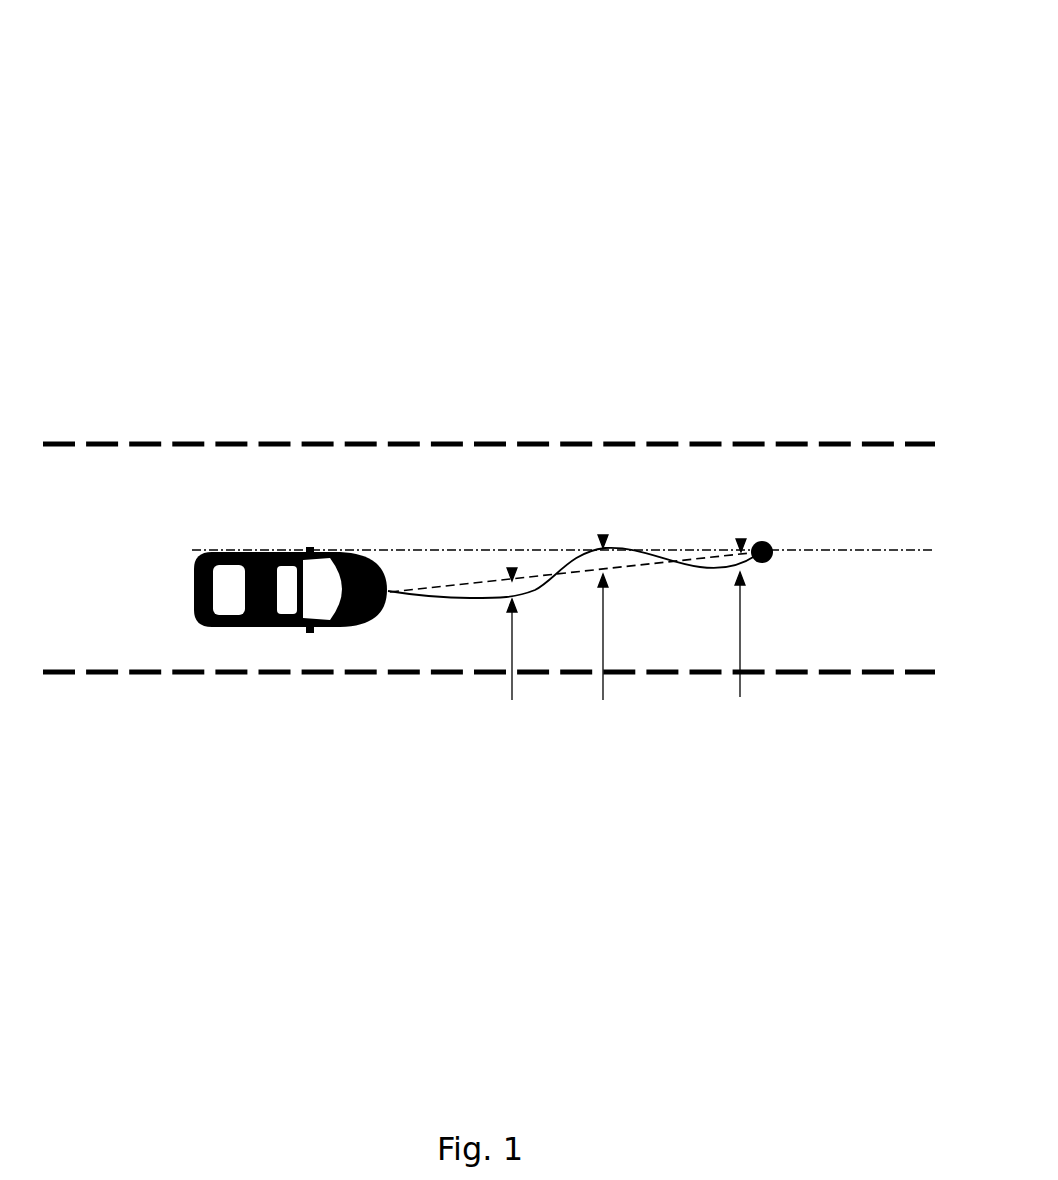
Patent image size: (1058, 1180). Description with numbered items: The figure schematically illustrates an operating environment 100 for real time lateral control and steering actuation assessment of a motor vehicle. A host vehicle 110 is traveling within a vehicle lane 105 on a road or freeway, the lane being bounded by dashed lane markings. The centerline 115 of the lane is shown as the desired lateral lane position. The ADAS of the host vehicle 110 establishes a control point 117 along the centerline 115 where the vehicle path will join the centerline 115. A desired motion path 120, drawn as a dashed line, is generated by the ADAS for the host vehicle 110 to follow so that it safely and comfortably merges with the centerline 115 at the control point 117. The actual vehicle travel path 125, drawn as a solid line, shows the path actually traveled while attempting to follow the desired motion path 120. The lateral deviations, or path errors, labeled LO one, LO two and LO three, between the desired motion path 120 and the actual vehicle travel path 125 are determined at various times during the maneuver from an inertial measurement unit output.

The operating environment 100 is at (477, 44).
The vehicle lane 105 is at (221, 424).
The host vehicle 110 is at (273, 646).
The centerline 115 is at (844, 542).
The control point 117 is at (782, 534).
The desired motion path 120 is at (466, 574).
The actual vehicle travel path 125 is at (469, 612).